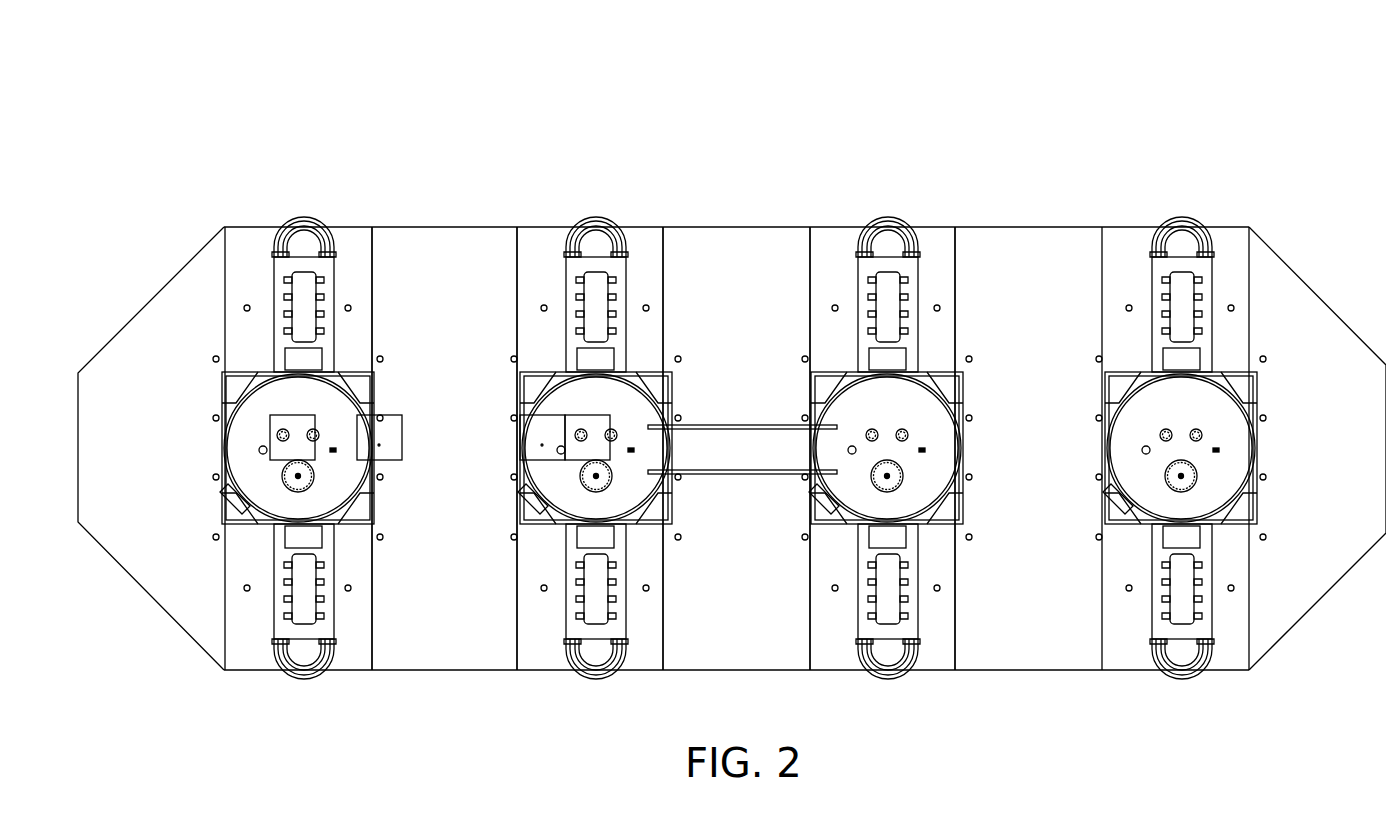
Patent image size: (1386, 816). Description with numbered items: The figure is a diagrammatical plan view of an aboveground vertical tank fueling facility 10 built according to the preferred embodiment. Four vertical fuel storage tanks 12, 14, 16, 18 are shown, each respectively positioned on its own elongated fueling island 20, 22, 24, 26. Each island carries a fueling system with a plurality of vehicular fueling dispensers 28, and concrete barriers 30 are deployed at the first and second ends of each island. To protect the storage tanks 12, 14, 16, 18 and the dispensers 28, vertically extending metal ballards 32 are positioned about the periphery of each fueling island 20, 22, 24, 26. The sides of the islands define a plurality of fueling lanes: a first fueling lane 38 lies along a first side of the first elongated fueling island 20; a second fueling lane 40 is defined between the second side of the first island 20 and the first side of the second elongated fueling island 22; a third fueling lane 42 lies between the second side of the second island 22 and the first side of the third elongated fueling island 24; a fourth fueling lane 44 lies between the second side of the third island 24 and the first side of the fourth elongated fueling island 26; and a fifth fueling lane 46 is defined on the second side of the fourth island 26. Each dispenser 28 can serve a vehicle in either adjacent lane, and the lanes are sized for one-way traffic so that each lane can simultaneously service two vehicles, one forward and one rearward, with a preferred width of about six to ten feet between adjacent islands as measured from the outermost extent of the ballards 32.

The aboveground vertical tank fueling facility 10 is at (346, 125).
The vertical fuel storage tank 12 is at (1234, 448).
The vertical fuel storage tank 14 is at (822, 460).
The vertical fuel storage tank 16 is at (657, 460).
The vertical fuel storage tank 18 is at (288, 448).
The first elongated fueling island 20 is at (1239, 459).
The second elongated fueling island 22 is at (973, 563).
The third elongated fueling island 24 is at (677, 563).
The fourth elongated fueling island 26 is at (385, 563).
The vehicular fueling dispenser 28 is at (718, 444).
The concrete barrier 30 is at (743, 450).
The vertically extending metal ballard 32 is at (217, 320).
The first fueling lane 38 is at (1312, 270).
The second fueling lane 40 is at (1022, 243).
The third fueling lane 42 is at (728, 243).
The fourth fueling lane 44 is at (437, 242).
The fifth fueling lane 46 is at (150, 334).